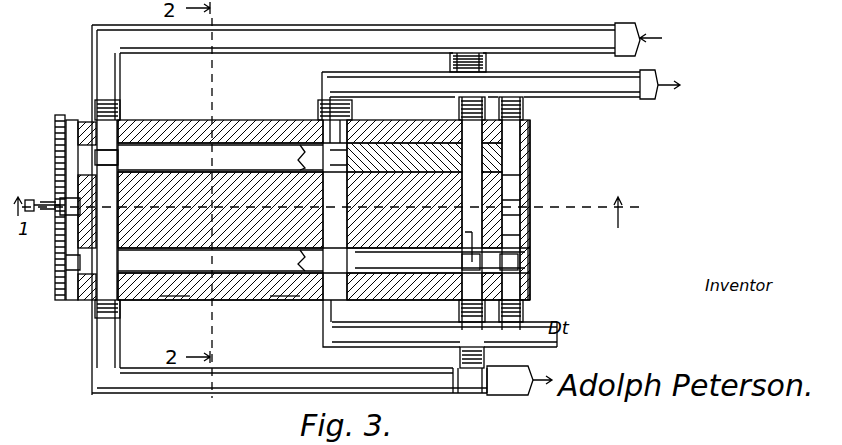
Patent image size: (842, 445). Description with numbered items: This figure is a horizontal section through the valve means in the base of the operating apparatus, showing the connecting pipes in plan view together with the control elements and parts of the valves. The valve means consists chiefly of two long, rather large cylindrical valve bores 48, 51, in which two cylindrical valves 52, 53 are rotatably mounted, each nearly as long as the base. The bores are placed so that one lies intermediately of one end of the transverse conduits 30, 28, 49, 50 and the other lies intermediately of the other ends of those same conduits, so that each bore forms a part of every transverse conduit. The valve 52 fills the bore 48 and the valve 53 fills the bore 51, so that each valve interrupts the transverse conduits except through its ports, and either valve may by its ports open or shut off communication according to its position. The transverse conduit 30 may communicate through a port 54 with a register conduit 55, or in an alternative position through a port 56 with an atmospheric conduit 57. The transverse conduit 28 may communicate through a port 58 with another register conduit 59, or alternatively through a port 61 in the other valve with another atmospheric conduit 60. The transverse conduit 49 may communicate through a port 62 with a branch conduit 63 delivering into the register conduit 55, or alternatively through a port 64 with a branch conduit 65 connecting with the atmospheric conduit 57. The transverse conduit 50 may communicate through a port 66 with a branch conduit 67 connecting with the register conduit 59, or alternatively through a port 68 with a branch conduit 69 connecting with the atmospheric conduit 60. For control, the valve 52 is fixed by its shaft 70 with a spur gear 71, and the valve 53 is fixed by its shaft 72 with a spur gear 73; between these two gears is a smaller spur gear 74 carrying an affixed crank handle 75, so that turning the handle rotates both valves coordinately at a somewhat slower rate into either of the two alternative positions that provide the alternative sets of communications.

The transverse conduit 28 is at (335, 210).
The transverse conduit 30 is at (106, 210).
The valve bore 48 is at (243, 143).
The transverse conduit 49 is at (528, 206).
The transverse conduit 50 is at (536, 189).
The valve bore 51 is at (174, 297).
The cylindrical valve 52 is at (220, 157).
The cylindrical valve 53 is at (220, 262).
The port 54 is at (137, 148).
The register conduit 55 is at (100, 44).
The port 56 is at (131, 297).
The atmospheric conduit 57 is at (92, 373).
The port 58 is at (316, 146).
The register conduit 59 is at (381, 97).
The atmospheric conduit 60 is at (329, 345).
The port 61 is at (289, 297).
The port 62 is at (451, 140).
The branch conduit 63 is at (487, 63).
The port 64 is at (524, 230).
The branch conduit 65 is at (460, 317).
The port 66 is at (531, 137).
The branch conduit 67 is at (523, 105).
The port 68 is at (536, 262).
The branch conduit 69 is at (523, 318).
The shaft 70 is at (73, 140).
The spur gear 71 is at (55, 122).
The shaft 72 is at (64, 302).
The spur gear 73 is at (62, 268).
The spur gear 74 is at (56, 215).
The crank handle 75 is at (50, 199).